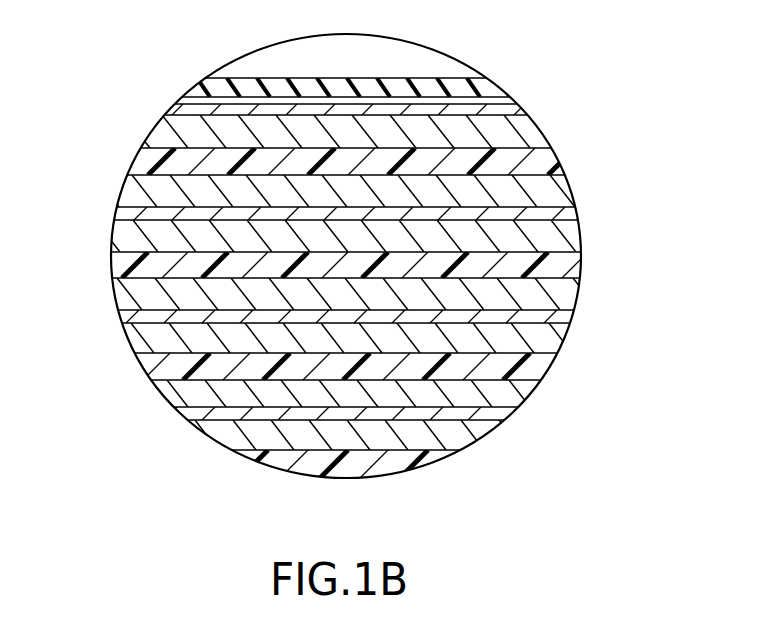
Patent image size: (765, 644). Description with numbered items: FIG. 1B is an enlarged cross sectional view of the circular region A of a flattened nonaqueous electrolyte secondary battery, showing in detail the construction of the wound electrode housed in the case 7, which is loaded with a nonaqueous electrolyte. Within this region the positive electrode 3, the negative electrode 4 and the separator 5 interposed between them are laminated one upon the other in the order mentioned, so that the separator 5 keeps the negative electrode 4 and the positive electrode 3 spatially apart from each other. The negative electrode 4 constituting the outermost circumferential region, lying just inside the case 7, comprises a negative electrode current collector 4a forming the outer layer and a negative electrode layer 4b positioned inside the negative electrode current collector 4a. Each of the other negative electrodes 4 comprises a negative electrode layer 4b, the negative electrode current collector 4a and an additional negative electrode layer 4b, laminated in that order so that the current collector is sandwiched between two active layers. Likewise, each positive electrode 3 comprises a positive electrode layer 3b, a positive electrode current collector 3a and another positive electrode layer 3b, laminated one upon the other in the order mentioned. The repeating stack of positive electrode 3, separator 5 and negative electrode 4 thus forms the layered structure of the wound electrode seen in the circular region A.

The circular region A is at (243, 74).
The case 7 is at (486, 90).
The negative electrode 4 is at (396, 224).
The negative electrode current collector 4a is at (510, 111).
The negative electrode layer 4b is at (512, 137).
The positive electrode 3 is at (397, 331).
The positive electrode current collector 3a is at (548, 215).
The positive electrode layer 3b is at (540, 192).
The separator 5 is at (160, 162).